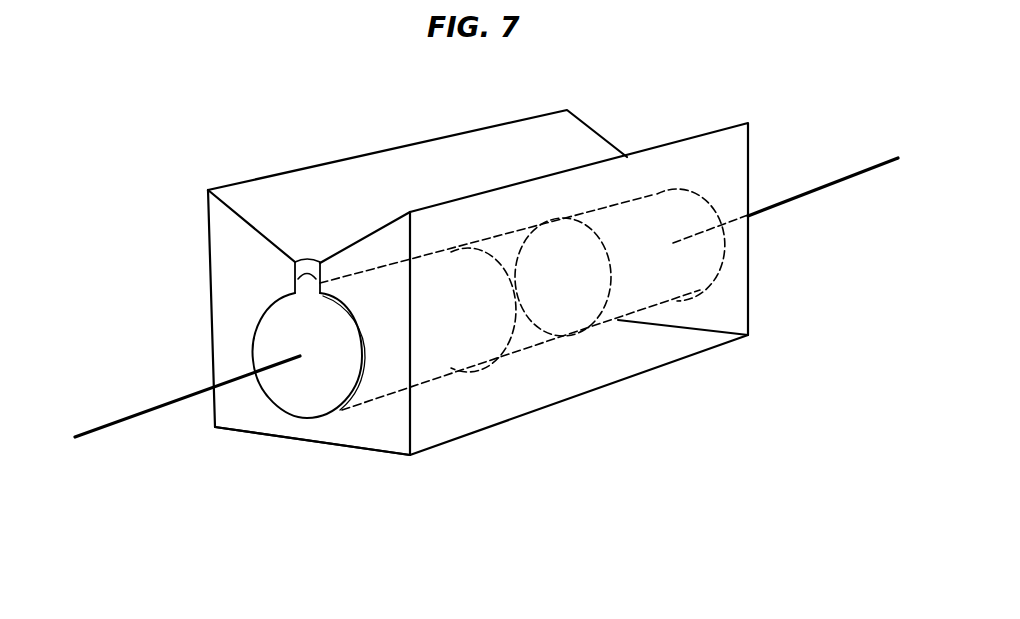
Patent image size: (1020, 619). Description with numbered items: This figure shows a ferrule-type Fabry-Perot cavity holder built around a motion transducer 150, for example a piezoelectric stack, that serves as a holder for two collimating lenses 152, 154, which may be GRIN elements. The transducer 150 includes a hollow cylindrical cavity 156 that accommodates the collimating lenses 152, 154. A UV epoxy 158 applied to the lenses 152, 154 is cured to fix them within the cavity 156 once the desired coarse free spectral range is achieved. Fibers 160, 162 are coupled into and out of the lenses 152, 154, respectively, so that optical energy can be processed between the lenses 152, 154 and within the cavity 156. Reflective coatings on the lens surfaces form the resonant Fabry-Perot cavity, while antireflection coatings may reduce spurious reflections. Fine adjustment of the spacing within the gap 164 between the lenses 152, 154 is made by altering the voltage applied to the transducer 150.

The motion transducer 150 is at (332, 202).
The collimating lens 152 is at (377, 383).
The collimating lens 154 is at (667, 287).
The hollow cylindrical cavity 156 is at (510, 233).
The UV epoxy 158 is at (295, 263).
The fiber 160 is at (147, 407).
The fiber 162 is at (835, 180).
The gap 164 is at (535, 345).